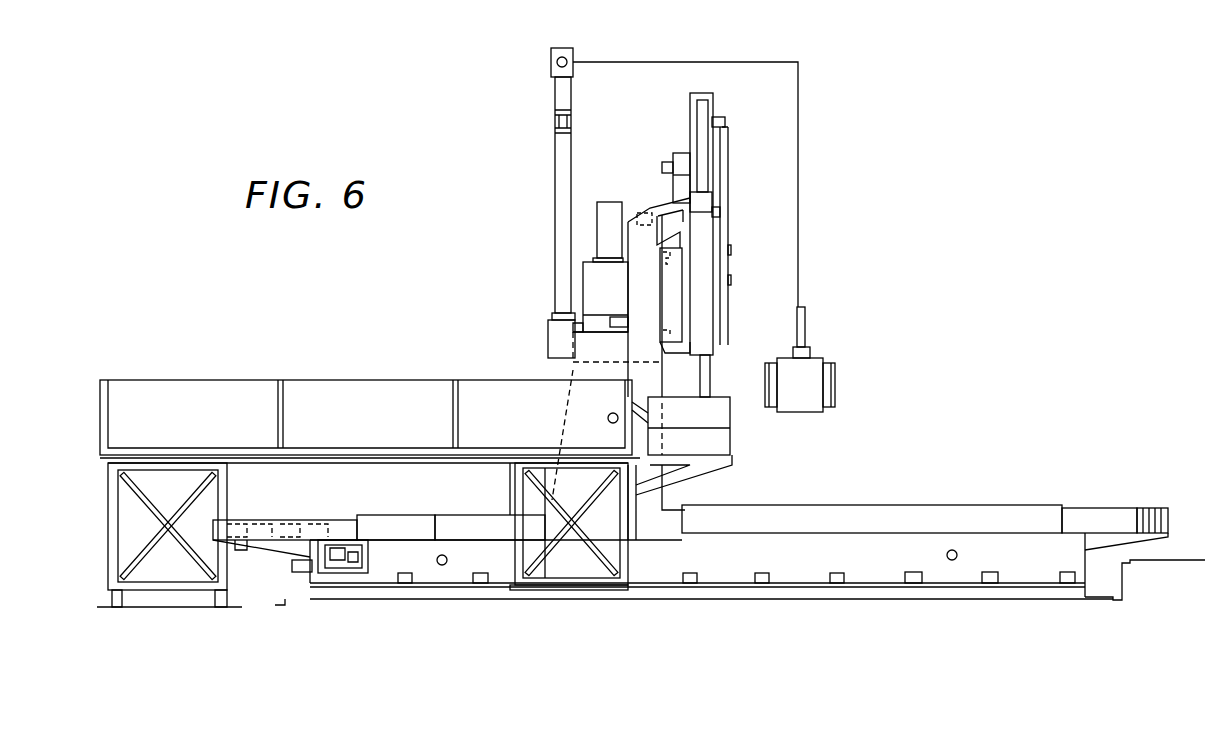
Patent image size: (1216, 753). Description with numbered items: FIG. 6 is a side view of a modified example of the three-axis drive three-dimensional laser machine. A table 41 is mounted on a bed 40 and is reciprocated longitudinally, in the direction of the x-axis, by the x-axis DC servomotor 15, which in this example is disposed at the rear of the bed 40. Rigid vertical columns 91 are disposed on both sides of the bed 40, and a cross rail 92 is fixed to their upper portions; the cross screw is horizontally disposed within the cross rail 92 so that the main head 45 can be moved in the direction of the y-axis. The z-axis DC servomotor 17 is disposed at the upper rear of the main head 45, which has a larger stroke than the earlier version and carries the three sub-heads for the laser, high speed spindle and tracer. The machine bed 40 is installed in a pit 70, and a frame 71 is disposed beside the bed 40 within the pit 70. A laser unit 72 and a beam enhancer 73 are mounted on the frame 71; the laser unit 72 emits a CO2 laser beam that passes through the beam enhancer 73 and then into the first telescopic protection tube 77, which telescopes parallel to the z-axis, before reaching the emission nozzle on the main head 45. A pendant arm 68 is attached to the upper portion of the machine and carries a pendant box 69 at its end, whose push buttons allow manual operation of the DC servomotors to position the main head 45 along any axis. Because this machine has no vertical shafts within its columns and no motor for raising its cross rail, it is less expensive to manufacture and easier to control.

The x-axis DC servomotor 15 is at (263, 520).
The z-axis DC servomotor 17 is at (673, 153).
The bed 40 is at (1028, 572).
The table 41 is at (965, 512).
The main head 45 is at (733, 258).
The pendant arm 68 is at (653, 62).
The pendant box 69 is at (837, 380).
The pit 70 is at (1105, 577).
The frame 71 is at (112, 512).
The laser unit 72 is at (220, 390).
The beam enhancer 73 is at (718, 418).
The first telescopic protection tube 77 is at (707, 372).
The rigid vertical column 91 is at (663, 495).
The cross rail 92 is at (672, 268).